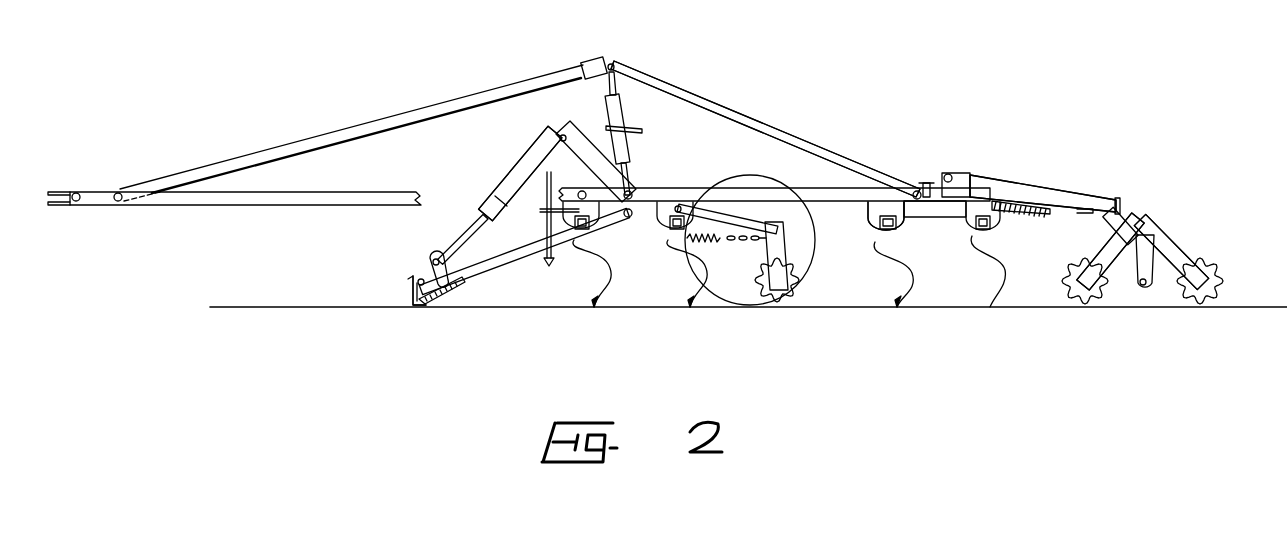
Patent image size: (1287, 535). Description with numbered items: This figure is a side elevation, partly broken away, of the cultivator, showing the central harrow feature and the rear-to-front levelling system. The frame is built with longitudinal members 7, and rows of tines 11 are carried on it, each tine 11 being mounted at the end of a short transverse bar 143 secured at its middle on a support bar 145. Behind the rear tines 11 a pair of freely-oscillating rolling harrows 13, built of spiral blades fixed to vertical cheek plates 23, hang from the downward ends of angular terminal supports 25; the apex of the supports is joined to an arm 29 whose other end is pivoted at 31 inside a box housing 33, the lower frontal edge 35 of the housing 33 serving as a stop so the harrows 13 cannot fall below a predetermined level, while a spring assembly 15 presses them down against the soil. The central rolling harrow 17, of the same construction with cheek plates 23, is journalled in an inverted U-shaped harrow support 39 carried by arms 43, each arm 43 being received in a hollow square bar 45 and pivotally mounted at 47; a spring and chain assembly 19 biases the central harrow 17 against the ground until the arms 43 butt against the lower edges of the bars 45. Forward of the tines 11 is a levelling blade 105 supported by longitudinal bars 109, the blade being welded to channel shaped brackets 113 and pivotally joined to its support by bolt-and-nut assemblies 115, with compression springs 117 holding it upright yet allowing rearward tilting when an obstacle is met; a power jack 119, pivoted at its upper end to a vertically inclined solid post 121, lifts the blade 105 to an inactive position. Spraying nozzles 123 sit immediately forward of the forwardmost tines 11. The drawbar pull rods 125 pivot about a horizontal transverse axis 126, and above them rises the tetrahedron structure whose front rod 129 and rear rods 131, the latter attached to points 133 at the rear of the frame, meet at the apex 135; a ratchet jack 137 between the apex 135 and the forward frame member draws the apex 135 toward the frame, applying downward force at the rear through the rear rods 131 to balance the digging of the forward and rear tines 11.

The longitudinal member 7 is at (763, 170).
The tine 11 is at (698, 272).
The transverse cylindrical freely-oscillating harrow 13 is at (1232, 264).
The spring assembly 15 is at (1027, 210).
The central transverse cylindrical rolling harrow 17 is at (777, 302).
The spring and chain assembly 19 is at (710, 243).
The cheek plate 23 is at (1085, 300).
The angular terminal support 25 is at (1174, 231).
The arm 29 is at (1075, 188).
The pivot 31 is at (948, 177).
The box housing 33 is at (958, 178).
The lower frontal edge 35 is at (972, 190).
The inverted U-shaped harrow support 39 is at (790, 232).
The arm 43 is at (752, 218).
The hollow square bar 45 is at (643, 210).
The pivot 47 is at (680, 207).
The blade 105 is at (408, 288).
The longitudinal bar 109 is at (517, 248).
The channel shaped bracket 113 is at (420, 307).
The bolt-and-nut assembly 115 is at (426, 264).
The compression spring 117 is at (444, 296).
The power jack 119 is at (498, 198).
The vertically inclined solid post 121 is at (587, 148).
The spraying nozzle 123 is at (552, 260).
The pull rod 125 is at (253, 200).
The horizontal transverse axis 126 is at (550, 146).
The front rod 129 is at (298, 147).
The rear rod 131 is at (697, 105).
The point 133 is at (917, 190).
The apex 135 is at (620, 57).
The ratchet jack 137 is at (640, 151).
The short transverse bar 143 is at (905, 237).
The support bar 145 is at (950, 208).